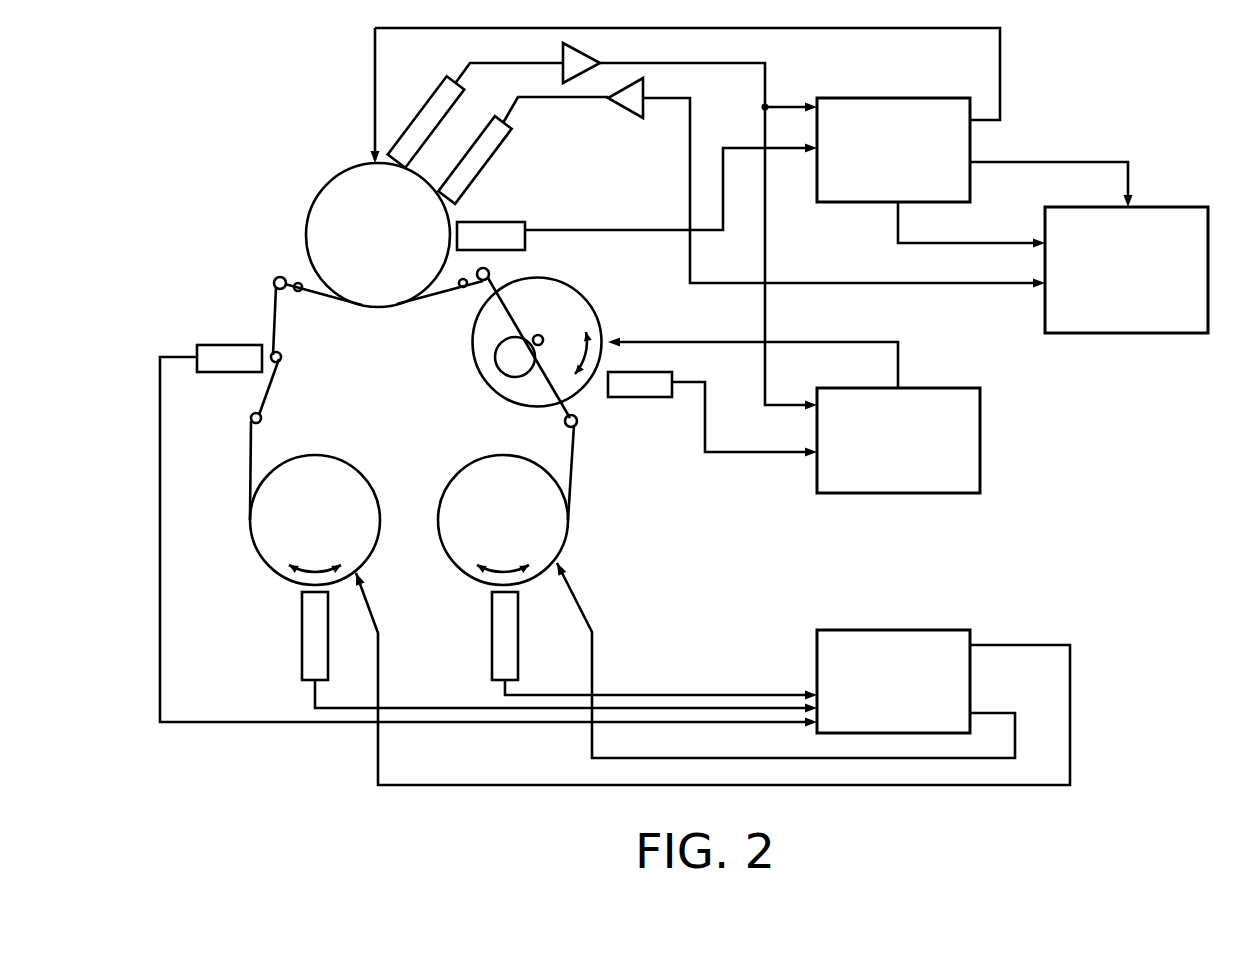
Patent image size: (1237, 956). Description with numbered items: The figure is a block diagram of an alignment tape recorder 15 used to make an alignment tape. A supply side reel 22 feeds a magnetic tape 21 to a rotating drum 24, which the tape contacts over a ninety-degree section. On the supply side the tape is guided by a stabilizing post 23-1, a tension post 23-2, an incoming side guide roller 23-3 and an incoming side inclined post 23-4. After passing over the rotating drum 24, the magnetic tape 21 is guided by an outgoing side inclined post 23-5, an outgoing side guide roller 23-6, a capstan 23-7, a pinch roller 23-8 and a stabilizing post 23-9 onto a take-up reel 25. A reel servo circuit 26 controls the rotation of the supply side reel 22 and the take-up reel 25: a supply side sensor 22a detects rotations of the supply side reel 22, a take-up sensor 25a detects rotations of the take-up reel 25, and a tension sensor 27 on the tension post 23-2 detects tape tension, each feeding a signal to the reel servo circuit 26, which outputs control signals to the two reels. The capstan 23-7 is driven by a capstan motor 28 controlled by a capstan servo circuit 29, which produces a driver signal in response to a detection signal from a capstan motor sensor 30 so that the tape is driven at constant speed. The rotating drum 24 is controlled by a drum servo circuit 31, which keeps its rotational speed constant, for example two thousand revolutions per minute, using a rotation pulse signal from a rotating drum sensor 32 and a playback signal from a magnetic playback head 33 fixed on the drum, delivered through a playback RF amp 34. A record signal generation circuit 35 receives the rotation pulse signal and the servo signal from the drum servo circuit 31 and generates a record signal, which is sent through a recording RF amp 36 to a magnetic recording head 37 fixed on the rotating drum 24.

The alignment tape recorder 15 is at (240, 176).
The magnetic tape 21 is at (248, 467).
The supply side reel 22 is at (372, 500).
The supply side sensor 22a is at (300, 640).
The stabilizing post 23-1 is at (262, 420).
The tension post 23-2 is at (282, 362).
The incoming side guide roller 23-3 is at (282, 292).
The incoming side inclined post 23-4 is at (302, 278).
The outgoing side inclined post 23-5 is at (460, 288).
The outgoing side guide roller 23-6 is at (490, 273).
The capstan 23-7 is at (542, 334).
The pinch roller 23-8 is at (505, 377).
The stabilizing post 23-9 is at (577, 424).
The rotating drum 24 is at (347, 170).
The take-up reel 25 is at (440, 537).
The take-up sensor 25a is at (492, 600).
The reel servo circuit 26 is at (877, 630).
The tension sensor 27 is at (210, 345).
The capstan motor 28 is at (592, 304).
The capstan servo circuit 29 is at (982, 452).
The capstan motor sensor 30 is at (635, 400).
The drum servo circuit 31 is at (888, 98).
The rotating drum sensor 32 is at (480, 222).
The magnetic playback head 33 is at (420, 107).
The playback RF amp 34 is at (590, 50).
The record signal generation circuit 35 is at (1163, 206).
The recording RF amp 36 is at (617, 107).
The magnetic recording head 37 is at (487, 165).